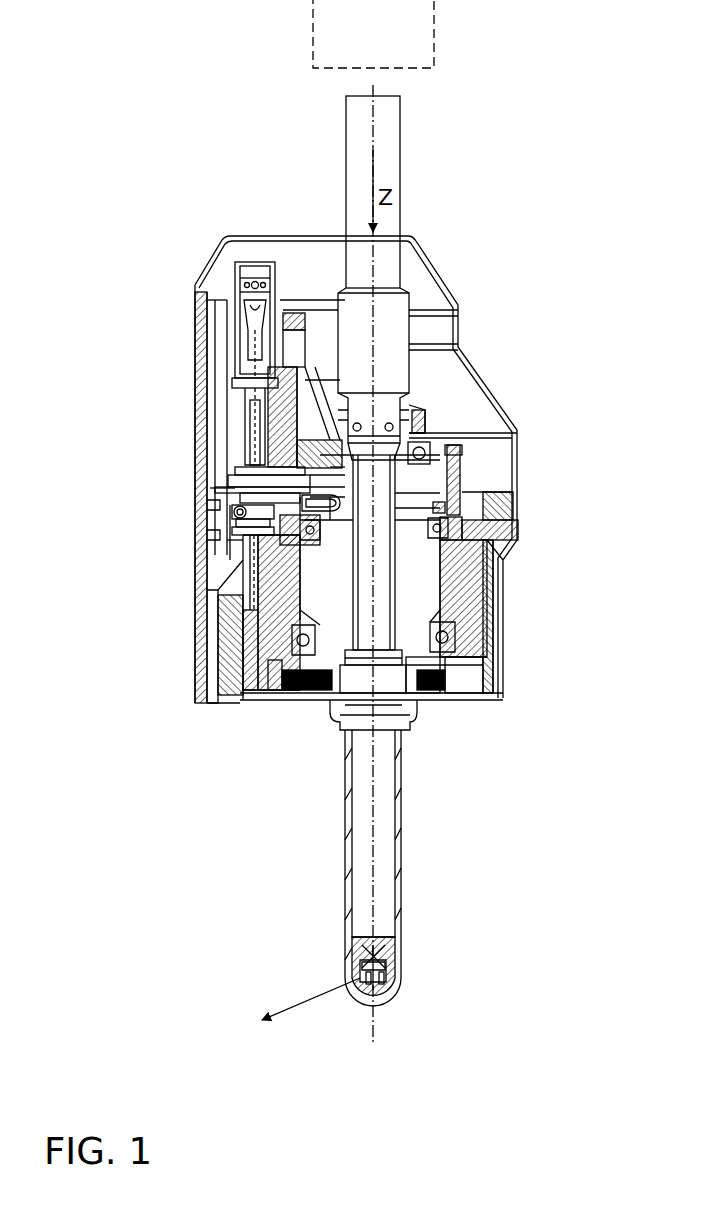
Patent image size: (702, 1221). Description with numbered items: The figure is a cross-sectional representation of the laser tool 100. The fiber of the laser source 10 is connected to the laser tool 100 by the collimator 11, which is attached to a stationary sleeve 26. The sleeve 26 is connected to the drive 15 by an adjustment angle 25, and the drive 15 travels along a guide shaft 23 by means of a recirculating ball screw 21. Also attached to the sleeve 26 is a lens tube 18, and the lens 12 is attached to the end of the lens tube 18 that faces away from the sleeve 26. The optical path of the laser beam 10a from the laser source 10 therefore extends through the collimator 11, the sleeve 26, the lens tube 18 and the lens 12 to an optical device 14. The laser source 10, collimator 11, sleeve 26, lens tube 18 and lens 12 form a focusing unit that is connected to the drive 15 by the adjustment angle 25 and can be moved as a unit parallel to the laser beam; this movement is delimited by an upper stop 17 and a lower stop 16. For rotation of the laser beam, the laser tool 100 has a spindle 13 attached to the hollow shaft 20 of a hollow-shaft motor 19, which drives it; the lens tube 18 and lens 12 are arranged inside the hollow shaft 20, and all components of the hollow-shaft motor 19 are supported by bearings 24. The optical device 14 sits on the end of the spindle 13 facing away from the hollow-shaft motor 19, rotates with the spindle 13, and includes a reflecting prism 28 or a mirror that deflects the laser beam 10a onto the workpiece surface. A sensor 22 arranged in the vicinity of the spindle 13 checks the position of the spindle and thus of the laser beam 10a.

The laser source 10 is at (313, 50).
The laser beam 10a is at (312, 1010).
The laser tool 100 is at (165, 198).
The collimator 11 is at (404, 181).
The lens 12 is at (385, 682).
The spindle 13 is at (399, 729).
The optical device 14 is at (395, 962).
The drive 15 is at (253, 343).
The lower stop 16 is at (424, 462).
The upper stop 17 is at (419, 423).
The lens tube 18 is at (483, 657).
The hollow-shaft motor 19 is at (474, 555).
The hollow shaft 20 is at (253, 702).
The recirculating ball screw 21 is at (238, 512).
The sensor 22 is at (290, 693).
The guide shaft 23 is at (285, 483).
The bearings 24 is at (262, 613).
The adjustment angle 25 is at (277, 413).
The sleeve 26 is at (403, 402).
The reflecting prism 28 is at (345, 957).